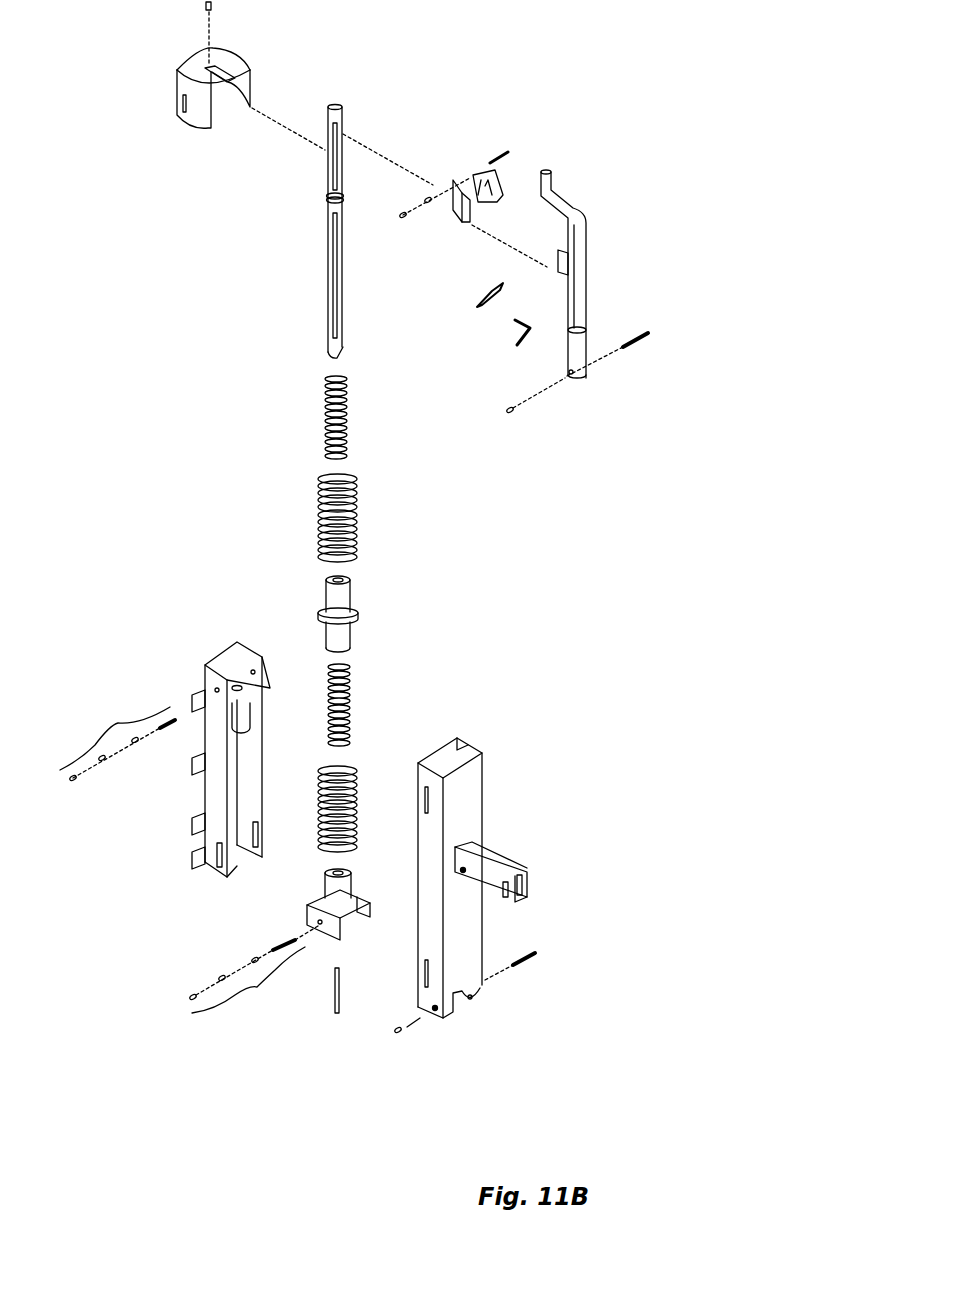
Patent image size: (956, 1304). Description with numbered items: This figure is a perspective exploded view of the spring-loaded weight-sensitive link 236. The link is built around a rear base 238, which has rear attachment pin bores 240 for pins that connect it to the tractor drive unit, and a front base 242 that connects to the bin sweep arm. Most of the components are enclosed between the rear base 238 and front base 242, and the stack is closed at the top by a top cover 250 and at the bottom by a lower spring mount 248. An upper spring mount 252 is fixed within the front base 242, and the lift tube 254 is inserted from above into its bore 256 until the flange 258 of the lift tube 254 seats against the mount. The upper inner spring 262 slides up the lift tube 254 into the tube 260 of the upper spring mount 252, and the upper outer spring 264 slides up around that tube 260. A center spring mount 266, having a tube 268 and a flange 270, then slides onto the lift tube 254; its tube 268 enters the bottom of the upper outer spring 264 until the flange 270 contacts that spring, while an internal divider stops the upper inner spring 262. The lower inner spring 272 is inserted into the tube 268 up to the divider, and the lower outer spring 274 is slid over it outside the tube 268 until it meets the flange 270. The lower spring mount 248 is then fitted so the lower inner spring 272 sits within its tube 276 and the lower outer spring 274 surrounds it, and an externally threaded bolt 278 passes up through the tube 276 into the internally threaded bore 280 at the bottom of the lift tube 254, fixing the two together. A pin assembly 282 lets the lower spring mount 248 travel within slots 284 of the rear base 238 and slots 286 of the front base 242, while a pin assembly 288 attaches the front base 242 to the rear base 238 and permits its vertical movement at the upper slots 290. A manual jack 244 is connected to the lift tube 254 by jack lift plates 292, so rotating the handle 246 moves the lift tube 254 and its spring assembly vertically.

The spring-loaded weight-sensitive link 236 is at (303, 1060).
The rear base 238 is at (467, 778).
The rear attachment pin bores 240 is at (527, 883).
The front base 242 is at (200, 655).
The manual jack 244 is at (578, 263).
The handle 246 is at (567, 207).
The lower spring mount 248 is at (292, 908).
The top cover 250 is at (188, 68).
The upper spring mount 252 is at (227, 700).
The lift tube 254 is at (320, 240).
The bore 256 is at (237, 686).
The flange 258 is at (330, 198).
The tube 260 is at (246, 718).
The upper inner spring 262 is at (325, 412).
The upper outer spring 264 is at (318, 522).
The center spring mount 266 is at (362, 612).
The tube 268 is at (343, 600).
The flange 270 is at (372, 607).
The lower inner spring 272 is at (358, 686).
The lower outer spring 274 is at (363, 765).
The tube 276 is at (340, 893).
The externally threaded bolt 278 is at (342, 993).
The internally threaded bore 280 is at (330, 357).
The pin assembly 282 is at (253, 976).
The slots 284 is at (417, 980).
The slots 286 is at (207, 863).
The pin assembly 288 is at (117, 739).
The upper slots 290 is at (428, 800).
The jack lift plates 292 is at (458, 180).